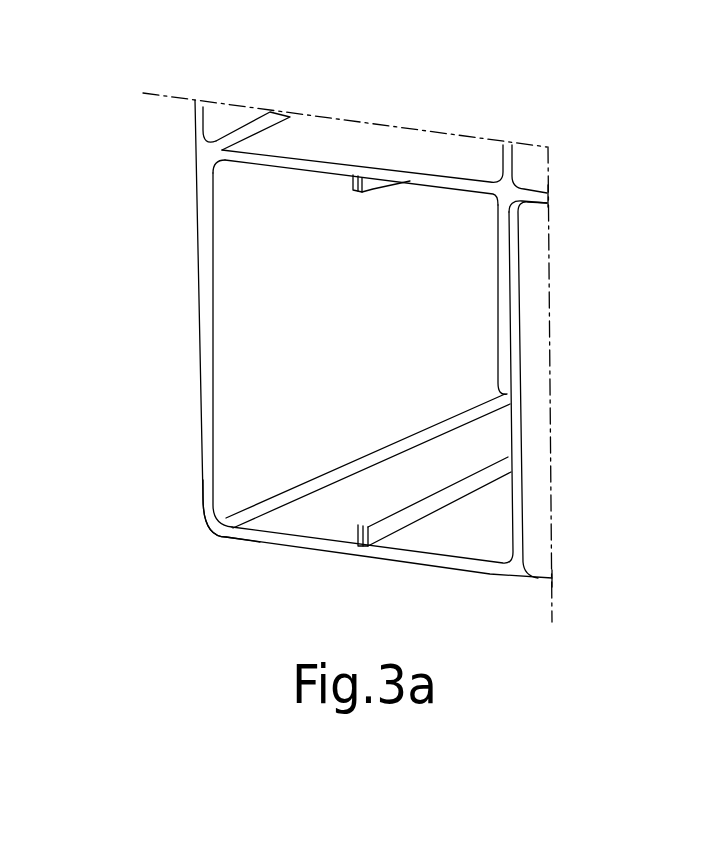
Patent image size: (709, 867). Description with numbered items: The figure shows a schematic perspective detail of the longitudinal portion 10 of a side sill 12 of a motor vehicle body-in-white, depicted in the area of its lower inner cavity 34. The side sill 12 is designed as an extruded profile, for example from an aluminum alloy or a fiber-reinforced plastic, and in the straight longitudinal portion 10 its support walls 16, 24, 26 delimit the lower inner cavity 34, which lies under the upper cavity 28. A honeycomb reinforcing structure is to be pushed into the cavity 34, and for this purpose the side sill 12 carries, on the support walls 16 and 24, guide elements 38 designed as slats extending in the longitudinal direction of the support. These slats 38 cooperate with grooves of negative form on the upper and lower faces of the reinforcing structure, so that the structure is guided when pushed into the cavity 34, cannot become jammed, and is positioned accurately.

The longitudinal portion 10 is at (326, 368).
The side sill 12 is at (203, 557).
The inner support wall 16 is at (233, 410).
The support wall 24 is at (383, 148).
The support wall 26 is at (522, 302).
The upper cavity 28 is at (282, 134).
The lower inner cavity 34 is at (317, 320).
The guide elements 38 is at (370, 190).